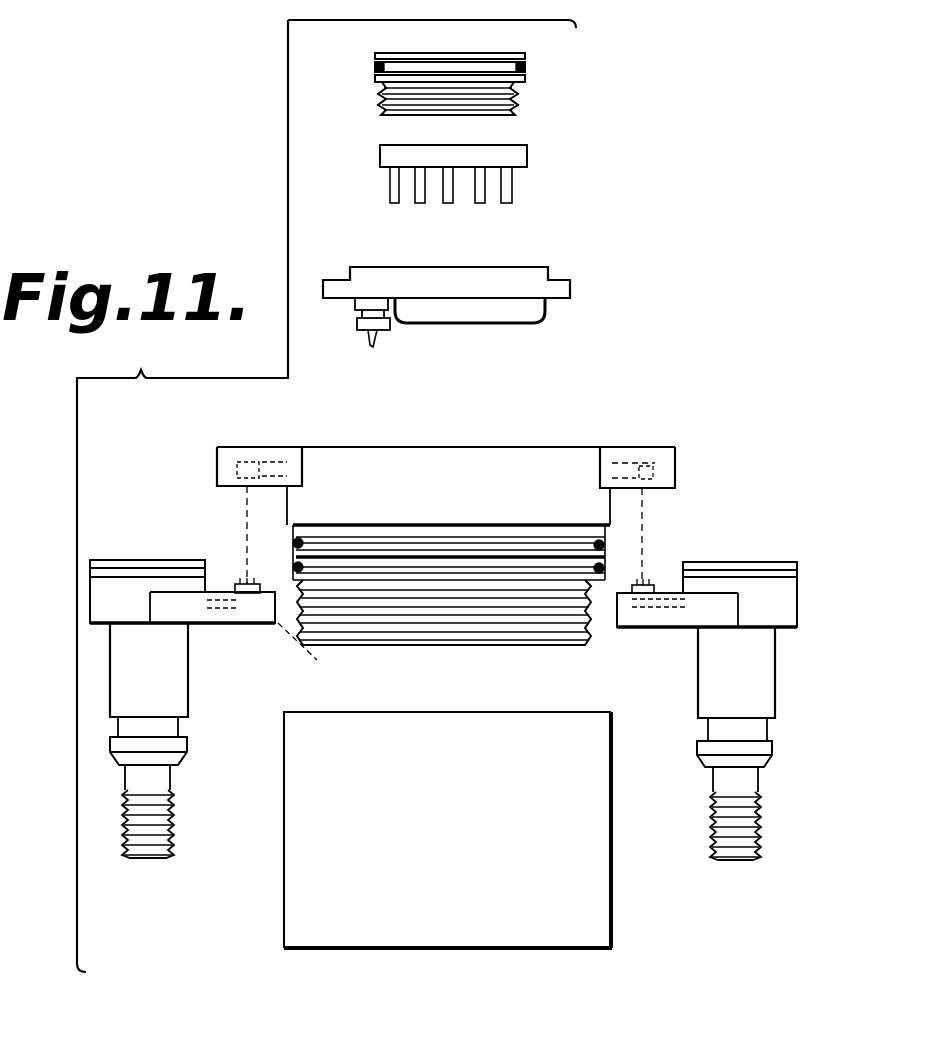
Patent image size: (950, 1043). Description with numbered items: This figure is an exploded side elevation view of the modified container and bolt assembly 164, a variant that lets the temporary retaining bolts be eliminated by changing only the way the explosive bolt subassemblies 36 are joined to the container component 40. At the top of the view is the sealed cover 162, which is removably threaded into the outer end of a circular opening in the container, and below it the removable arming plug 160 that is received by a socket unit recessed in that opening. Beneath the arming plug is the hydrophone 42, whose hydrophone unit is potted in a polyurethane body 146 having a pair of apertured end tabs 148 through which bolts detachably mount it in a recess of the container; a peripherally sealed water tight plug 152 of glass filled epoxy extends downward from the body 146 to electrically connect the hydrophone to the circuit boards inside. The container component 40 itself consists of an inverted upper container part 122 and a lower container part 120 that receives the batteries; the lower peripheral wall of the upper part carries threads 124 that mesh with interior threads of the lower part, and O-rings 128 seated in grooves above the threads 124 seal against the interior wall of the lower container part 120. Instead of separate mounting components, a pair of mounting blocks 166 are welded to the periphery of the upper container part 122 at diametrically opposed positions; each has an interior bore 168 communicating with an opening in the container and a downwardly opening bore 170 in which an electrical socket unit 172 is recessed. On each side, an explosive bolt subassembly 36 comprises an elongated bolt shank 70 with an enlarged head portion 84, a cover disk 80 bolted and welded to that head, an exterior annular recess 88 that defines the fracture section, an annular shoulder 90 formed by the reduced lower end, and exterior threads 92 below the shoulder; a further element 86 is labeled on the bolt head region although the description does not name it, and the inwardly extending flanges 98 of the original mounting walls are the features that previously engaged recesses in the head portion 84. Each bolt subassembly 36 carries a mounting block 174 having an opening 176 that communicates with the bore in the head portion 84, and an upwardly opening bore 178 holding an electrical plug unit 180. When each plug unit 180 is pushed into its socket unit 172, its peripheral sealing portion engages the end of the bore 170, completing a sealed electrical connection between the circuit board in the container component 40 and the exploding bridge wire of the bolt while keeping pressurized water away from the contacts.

The sealed cover 162 is at (500, 54).
The arming plug 160 is at (522, 155).
The hydrophone 42 is at (496, 265).
The apertured end tabs 148 is at (602, 286).
The polyurethane body 146 is at (473, 287).
The water tight plug 152 is at (382, 328).
The container component 40 is at (592, 437).
The upper container part 122 is at (497, 423).
The assembly 164 is at (583, 397).
The mounting blocks 166 is at (677, 445).
The interior bore 168 is at (278, 455).
The downwardly opening bore 170 is at (225, 471).
The electrical socket unit 172 is at (262, 420).
The mounting block 174 is at (214, 614).
The opening 176 is at (680, 630).
The upwardly opening bore 178 is at (330, 654).
The electrical plug unit 180 is at (655, 582).
The O-rings 128 is at (297, 560).
The threads 124 is at (457, 627).
The explosive bolt subassembly 36 is at (145, 555).
The cover disk 80 is at (744, 566).
The bracket top plate 86 is at (797, 572).
The head portion 84 is at (785, 607).
The bolt shank 70 is at (707, 682).
The annular recess 88 is at (707, 723).
The annular shoulder 90 is at (758, 768).
The inwardly extending flanges 98 is at (170, 822).
The exterior threads 92 is at (752, 826).
The lower container part 120 is at (607, 830).